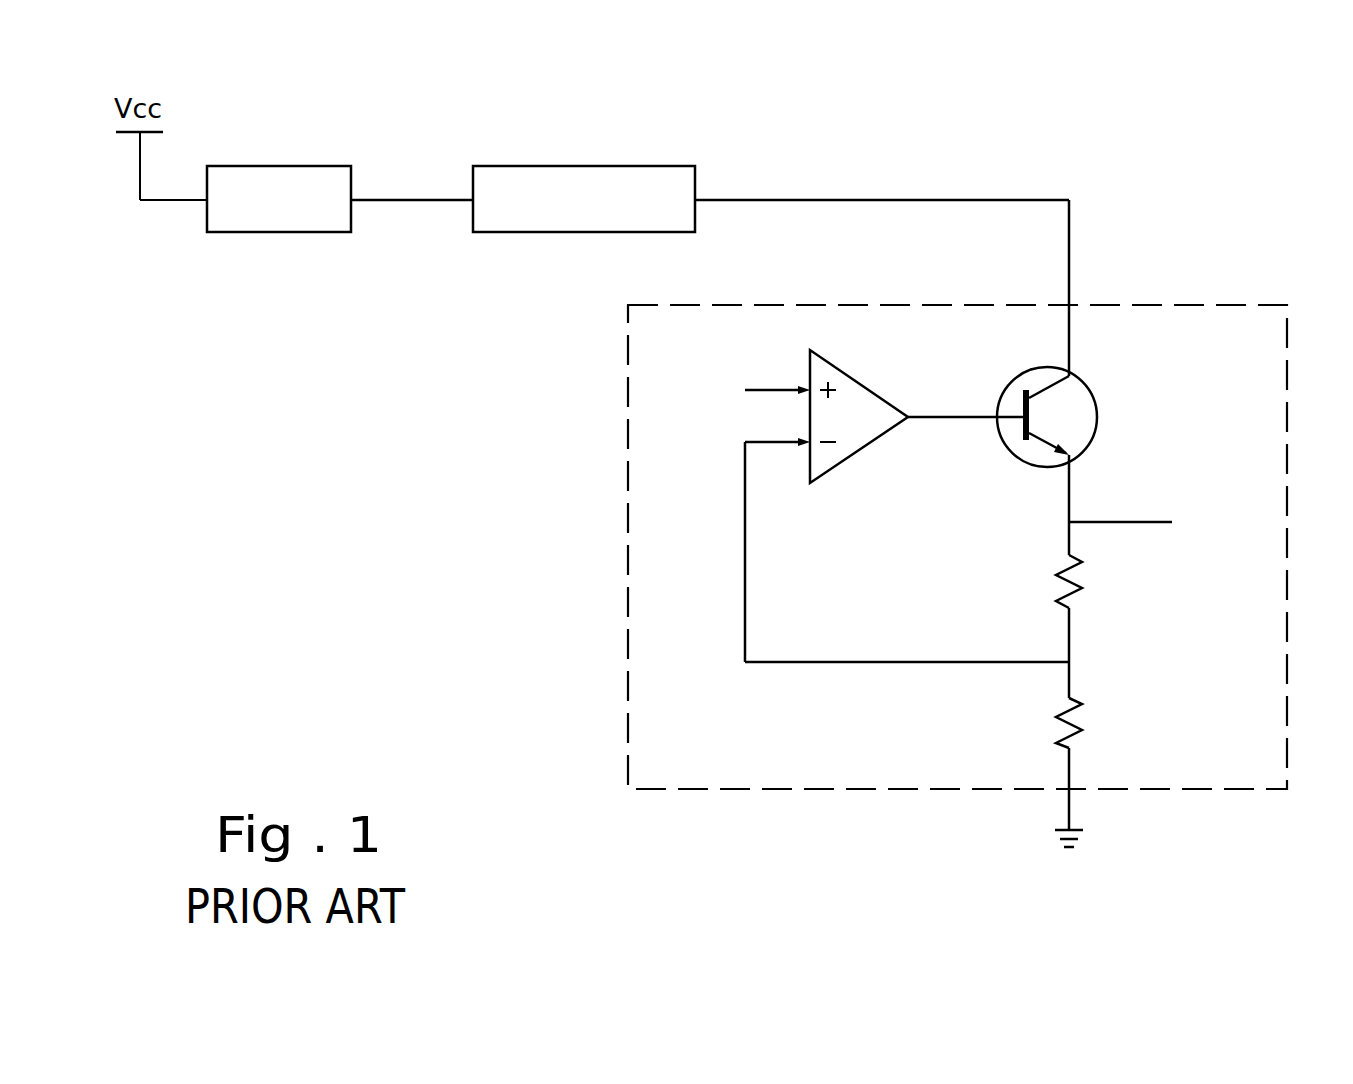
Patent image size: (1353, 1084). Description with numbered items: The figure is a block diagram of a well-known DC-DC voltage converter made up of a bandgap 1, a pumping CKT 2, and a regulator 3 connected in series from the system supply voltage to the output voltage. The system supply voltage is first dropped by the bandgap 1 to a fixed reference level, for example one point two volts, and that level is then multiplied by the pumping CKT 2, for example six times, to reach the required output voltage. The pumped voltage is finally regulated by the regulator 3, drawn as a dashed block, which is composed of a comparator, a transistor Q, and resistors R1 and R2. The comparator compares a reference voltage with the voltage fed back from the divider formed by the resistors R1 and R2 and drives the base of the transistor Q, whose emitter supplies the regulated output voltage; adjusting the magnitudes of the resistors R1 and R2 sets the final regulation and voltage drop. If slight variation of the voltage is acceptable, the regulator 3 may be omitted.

The bandgap 1 is at (262, 173).
The pumping CKT 2 is at (580, 176).
The regulator 3 is at (650, 665).
The transistor Q is at (1006, 441).
The resistor R1 is at (1091, 581).
The resistor R2 is at (1091, 723).